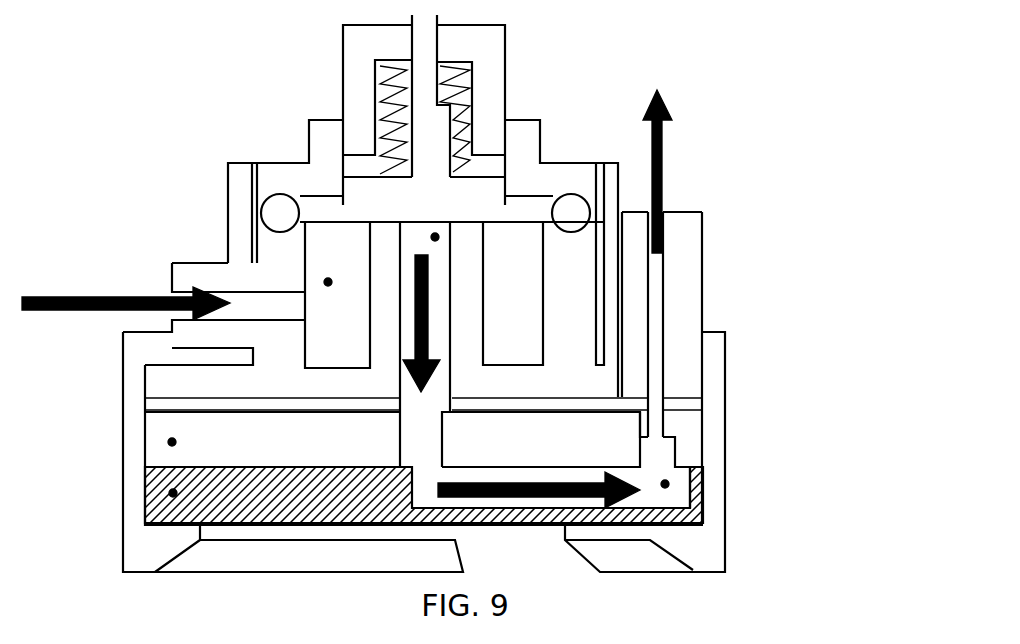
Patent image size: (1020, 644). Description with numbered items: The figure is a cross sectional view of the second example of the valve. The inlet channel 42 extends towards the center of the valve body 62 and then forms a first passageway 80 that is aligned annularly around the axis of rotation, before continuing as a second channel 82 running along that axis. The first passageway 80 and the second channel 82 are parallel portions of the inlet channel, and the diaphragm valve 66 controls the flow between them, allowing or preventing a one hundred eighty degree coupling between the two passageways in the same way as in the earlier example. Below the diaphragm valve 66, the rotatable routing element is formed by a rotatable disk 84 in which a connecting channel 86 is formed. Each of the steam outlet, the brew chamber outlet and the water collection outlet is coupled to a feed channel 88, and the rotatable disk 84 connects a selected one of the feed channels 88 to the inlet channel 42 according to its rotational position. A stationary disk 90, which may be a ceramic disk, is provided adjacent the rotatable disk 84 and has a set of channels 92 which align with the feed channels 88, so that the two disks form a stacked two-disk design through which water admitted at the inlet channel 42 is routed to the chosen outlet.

The inlet channel 42 is at (190, 262).
The valve body 62 is at (578, 163).
The diaphragm valve 66 is at (352, 186).
The first passageway 80 is at (328, 282).
The second channel 82 is at (440, 237).
The rotatable disk 84 is at (173, 493).
The connecting channel 86 is at (667, 484).
The feed channel 88 is at (663, 326).
The stationary disk 90 is at (172, 442).
The set of channels 92 is at (677, 447).